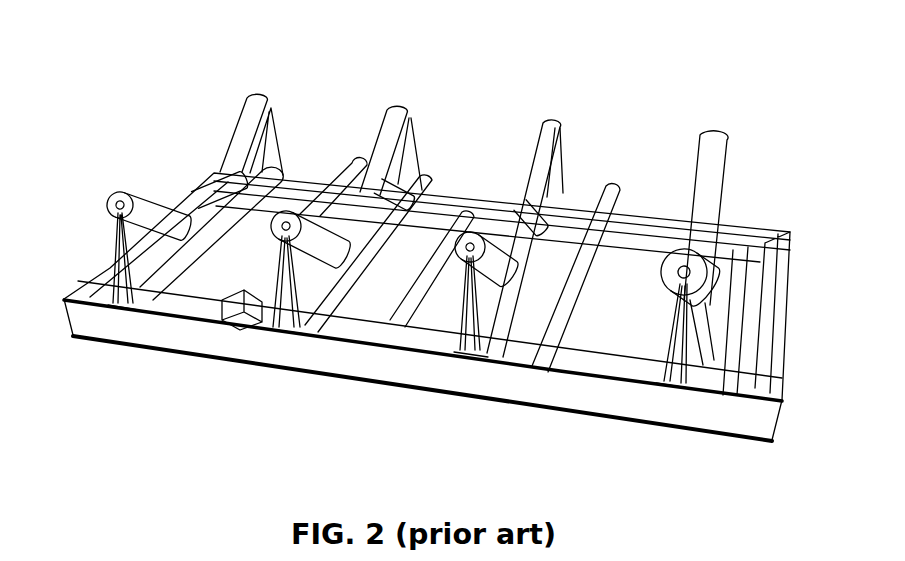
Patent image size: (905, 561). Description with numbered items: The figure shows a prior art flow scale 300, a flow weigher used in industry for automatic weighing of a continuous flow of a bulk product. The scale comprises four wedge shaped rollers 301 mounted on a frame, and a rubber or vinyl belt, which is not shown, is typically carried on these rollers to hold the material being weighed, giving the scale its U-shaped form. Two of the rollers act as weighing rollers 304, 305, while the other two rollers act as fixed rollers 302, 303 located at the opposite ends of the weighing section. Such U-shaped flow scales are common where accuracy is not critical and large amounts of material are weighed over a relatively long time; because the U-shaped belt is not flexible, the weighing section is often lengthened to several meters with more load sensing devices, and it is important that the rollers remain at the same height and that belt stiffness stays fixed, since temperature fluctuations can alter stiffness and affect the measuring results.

The prior art roller support assembly 300 is at (197, 68).
The wedge shaped rollers 301 is at (694, 137).
The fixed roller 302 is at (727, 152).
The fixed roller 303 is at (113, 194).
The weighing roller 304 is at (550, 151).
The weighing roller 305 is at (399, 128).